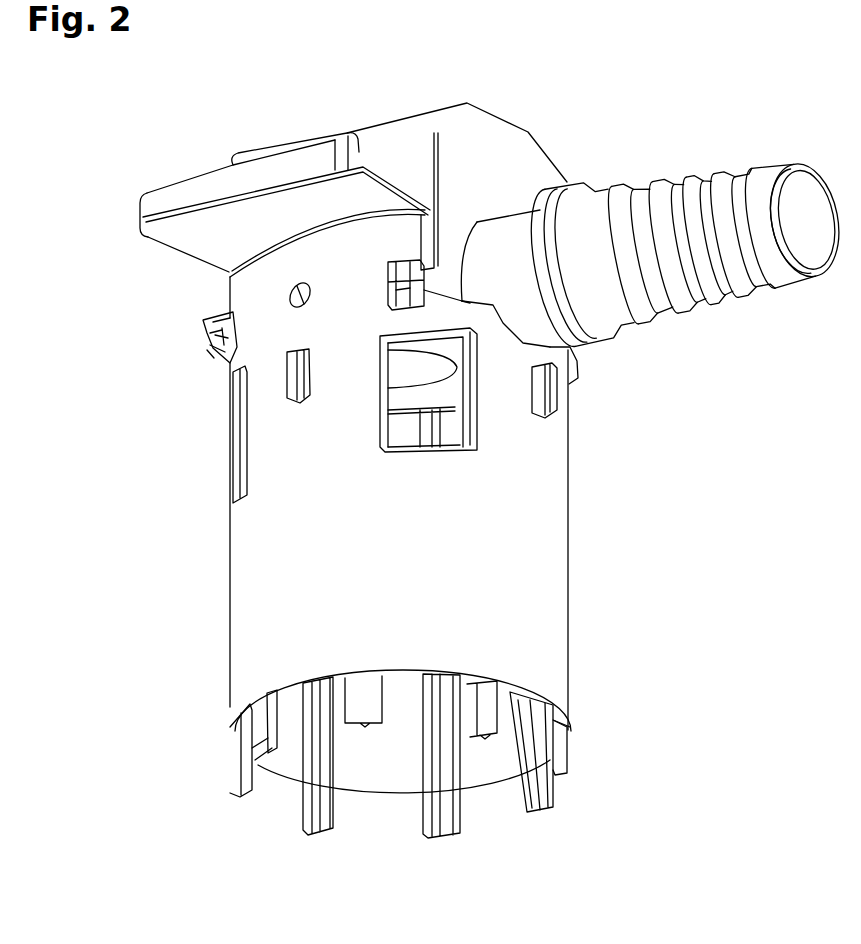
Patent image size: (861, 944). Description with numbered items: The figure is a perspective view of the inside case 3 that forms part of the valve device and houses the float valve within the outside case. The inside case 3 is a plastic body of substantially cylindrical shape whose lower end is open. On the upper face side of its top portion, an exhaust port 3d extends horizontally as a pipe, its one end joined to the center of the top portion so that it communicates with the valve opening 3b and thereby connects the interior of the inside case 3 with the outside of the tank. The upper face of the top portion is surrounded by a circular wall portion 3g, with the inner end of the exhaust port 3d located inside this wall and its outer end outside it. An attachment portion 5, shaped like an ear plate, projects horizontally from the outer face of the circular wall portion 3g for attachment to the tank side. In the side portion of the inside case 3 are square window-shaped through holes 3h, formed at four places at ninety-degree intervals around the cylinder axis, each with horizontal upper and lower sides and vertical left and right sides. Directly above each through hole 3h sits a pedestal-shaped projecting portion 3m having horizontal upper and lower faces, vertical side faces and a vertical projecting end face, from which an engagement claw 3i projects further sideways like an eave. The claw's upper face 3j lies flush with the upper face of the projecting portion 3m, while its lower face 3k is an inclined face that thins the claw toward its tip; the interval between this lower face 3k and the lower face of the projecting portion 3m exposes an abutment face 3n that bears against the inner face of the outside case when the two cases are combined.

The inside case 3 is at (533, 573).
The valve opening 3b is at (397, 377).
The exhaust port 3d is at (647, 197).
The circular wall portion 3g is at (487, 137).
The through holes 3h is at (233, 440).
The engagement claws 3i is at (402, 262).
The upper face 3j is at (223, 313).
The lower face 3k is at (390, 283).
The pedestal-shaped projecting portions 3m is at (203, 357).
The abutment face 3n is at (207, 350).
The attachment portion 5 is at (263, 177).